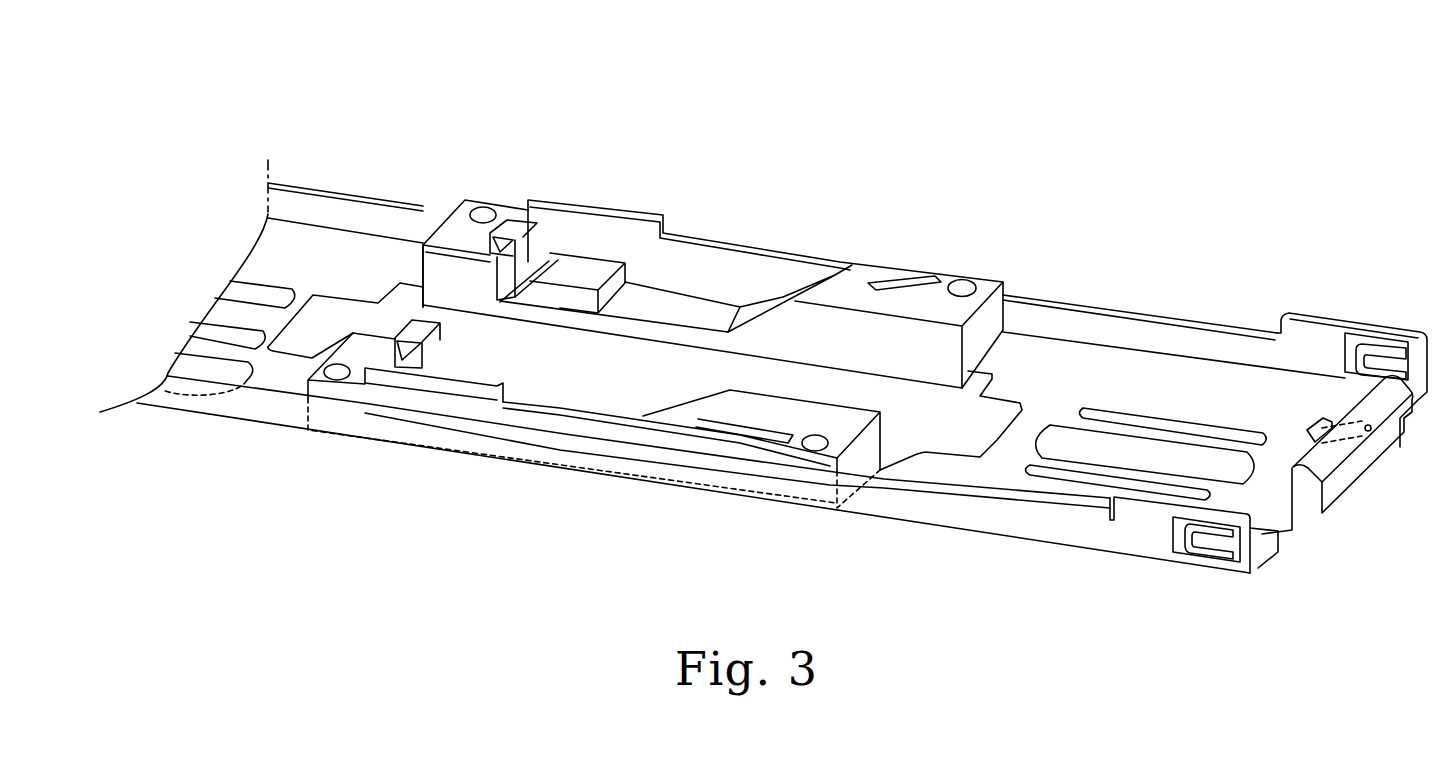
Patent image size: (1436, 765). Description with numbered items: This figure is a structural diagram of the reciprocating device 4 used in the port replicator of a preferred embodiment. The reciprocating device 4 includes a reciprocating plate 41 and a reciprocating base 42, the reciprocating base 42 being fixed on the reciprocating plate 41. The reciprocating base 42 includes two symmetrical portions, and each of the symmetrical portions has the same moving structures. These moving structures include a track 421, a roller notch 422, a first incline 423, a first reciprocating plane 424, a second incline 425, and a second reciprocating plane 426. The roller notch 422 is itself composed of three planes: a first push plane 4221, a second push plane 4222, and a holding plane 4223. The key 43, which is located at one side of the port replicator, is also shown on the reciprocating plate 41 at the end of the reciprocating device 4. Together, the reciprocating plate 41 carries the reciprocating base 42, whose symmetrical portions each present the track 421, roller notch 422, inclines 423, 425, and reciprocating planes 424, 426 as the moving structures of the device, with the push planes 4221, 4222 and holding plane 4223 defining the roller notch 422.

The reciprocating device 4 is at (824, 88).
The reciprocating plate 41 is at (1153, 383).
The reciprocating base 42 is at (645, 369).
The track 421 is at (853, 272).
The roller notch 422 is at (514, 233).
The first incline 423 is at (510, 300).
The first reciprocating plane 424 is at (597, 270).
The second incline 425 is at (787, 297).
The second reciprocating plane 426 is at (897, 297).
The key 43 is at (1360, 475).
The first push plane 4221 is at (510, 300).
The second push plane 4222 is at (502, 280).
The holding plane 4223 is at (510, 300).